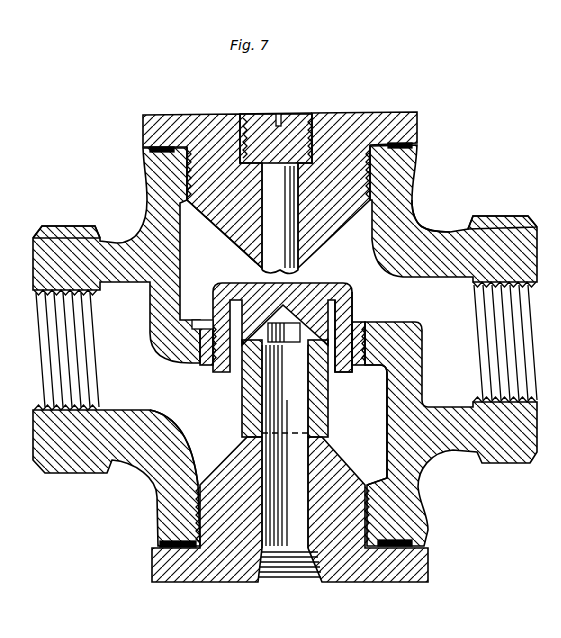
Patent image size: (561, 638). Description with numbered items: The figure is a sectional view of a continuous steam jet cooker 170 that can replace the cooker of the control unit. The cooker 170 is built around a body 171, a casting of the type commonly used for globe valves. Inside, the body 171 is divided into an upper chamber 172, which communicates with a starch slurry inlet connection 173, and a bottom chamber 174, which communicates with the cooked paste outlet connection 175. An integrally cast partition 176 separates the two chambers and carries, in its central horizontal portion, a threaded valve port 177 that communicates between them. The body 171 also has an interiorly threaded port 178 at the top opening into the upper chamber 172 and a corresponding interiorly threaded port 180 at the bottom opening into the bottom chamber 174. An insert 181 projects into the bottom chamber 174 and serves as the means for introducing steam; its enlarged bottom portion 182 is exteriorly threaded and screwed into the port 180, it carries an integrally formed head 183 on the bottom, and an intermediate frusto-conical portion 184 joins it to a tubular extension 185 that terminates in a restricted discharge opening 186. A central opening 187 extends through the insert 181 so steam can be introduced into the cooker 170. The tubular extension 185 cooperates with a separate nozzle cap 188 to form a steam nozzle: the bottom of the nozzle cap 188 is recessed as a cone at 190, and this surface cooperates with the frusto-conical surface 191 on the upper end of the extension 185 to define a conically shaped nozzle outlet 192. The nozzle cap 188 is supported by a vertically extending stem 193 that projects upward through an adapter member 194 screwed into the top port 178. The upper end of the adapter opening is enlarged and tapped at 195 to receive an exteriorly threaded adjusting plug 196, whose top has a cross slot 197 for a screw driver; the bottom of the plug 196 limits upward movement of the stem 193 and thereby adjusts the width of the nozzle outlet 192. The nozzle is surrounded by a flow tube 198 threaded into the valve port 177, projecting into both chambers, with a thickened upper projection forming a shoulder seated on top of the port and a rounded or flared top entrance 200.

The continuous steam jet cooker 170 is at (285, 325).
The body 171 is at (418, 208).
The upper chamber 172 is at (400, 258).
The starch slurry inlet connection 173 is at (505, 215).
The bottom chamber 174 is at (150, 418).
The cooked paste outlet connection 175 is at (70, 226).
The partition 176 is at (485, 342).
The threaded valve port 177 is at (375, 355).
The interiorly threaded port 178 is at (152, 153).
The interiorly threaded port 180 is at (430, 517).
The insert 181 is at (222, 456).
The enlarged bottom portion 182 is at (340, 478).
The head 183 is at (408, 582).
The frusto-conical portion 184 is at (348, 428).
The tubular extension 185 is at (248, 378).
The restricted discharge opening 186 is at (242, 435).
The central opening 187 is at (292, 343).
The nozzle cap 188 is at (244, 250).
The conical recess 190 is at (318, 278).
The frusto-conical surface 191 is at (250, 300).
The nozzle outlet 192 is at (320, 320).
The stem 193 is at (314, 220).
The adapter member 194 is at (280, 172).
The tapped hole 195 is at (275, 119).
The adjusting plug 196 is at (247, 116).
The cross slot 197 is at (278, 112).
The flow tube 198 is at (352, 307).
The flared entrance 200 is at (242, 275).